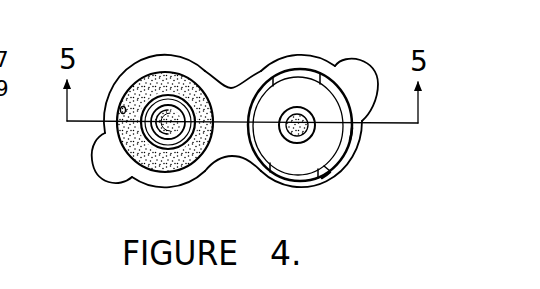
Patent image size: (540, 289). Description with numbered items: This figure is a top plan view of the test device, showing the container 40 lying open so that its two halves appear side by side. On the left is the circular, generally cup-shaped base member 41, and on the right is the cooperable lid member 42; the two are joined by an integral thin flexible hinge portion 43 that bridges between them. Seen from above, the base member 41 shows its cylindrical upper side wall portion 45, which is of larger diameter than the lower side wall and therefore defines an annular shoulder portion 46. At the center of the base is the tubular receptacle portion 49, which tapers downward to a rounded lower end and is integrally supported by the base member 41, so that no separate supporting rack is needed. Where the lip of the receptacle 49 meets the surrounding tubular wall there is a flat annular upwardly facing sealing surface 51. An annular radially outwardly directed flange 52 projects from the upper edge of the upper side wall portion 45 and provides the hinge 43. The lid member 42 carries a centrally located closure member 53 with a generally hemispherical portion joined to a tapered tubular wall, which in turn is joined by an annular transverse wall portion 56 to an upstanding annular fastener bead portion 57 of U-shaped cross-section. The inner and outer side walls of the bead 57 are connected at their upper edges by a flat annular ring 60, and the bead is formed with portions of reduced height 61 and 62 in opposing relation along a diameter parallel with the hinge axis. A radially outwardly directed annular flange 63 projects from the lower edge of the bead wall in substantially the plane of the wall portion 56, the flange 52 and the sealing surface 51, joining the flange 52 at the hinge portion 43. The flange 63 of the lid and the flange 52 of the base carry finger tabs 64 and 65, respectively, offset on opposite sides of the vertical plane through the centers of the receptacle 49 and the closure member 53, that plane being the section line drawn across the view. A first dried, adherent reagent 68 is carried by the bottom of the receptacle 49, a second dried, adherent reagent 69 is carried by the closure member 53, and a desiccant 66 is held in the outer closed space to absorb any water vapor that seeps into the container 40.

The container 40 is at (264, 46).
The base member 41 is at (100, 127).
The lid member 42 is at (371, 142).
The hinge portion 43 is at (232, 157).
The upper side wall portion 45 is at (122, 107).
The annular shoulder portion 46 is at (148, 73).
The receptacle portion 49 is at (163, 134).
The sealing surface 51 is at (193, 109).
The flange 52 is at (160, 187).
The closure member 53 is at (308, 134).
The transverse wall portion 56 is at (322, 103).
The fastener bead portion 57 is at (353, 133).
The ring 60 is at (356, 166).
The portion of reduced height 61 is at (287, 173).
The portion of reduced height 62 is at (303, 72).
The flange 63 is at (331, 173).
The finger tab 64 is at (358, 74).
The finger tab 65 is at (100, 163).
The desiccant 66 is at (191, 160).
The first dried, adherent reagent 68 is at (177, 106).
The second dried, adherent reagent 69 is at (284, 134).